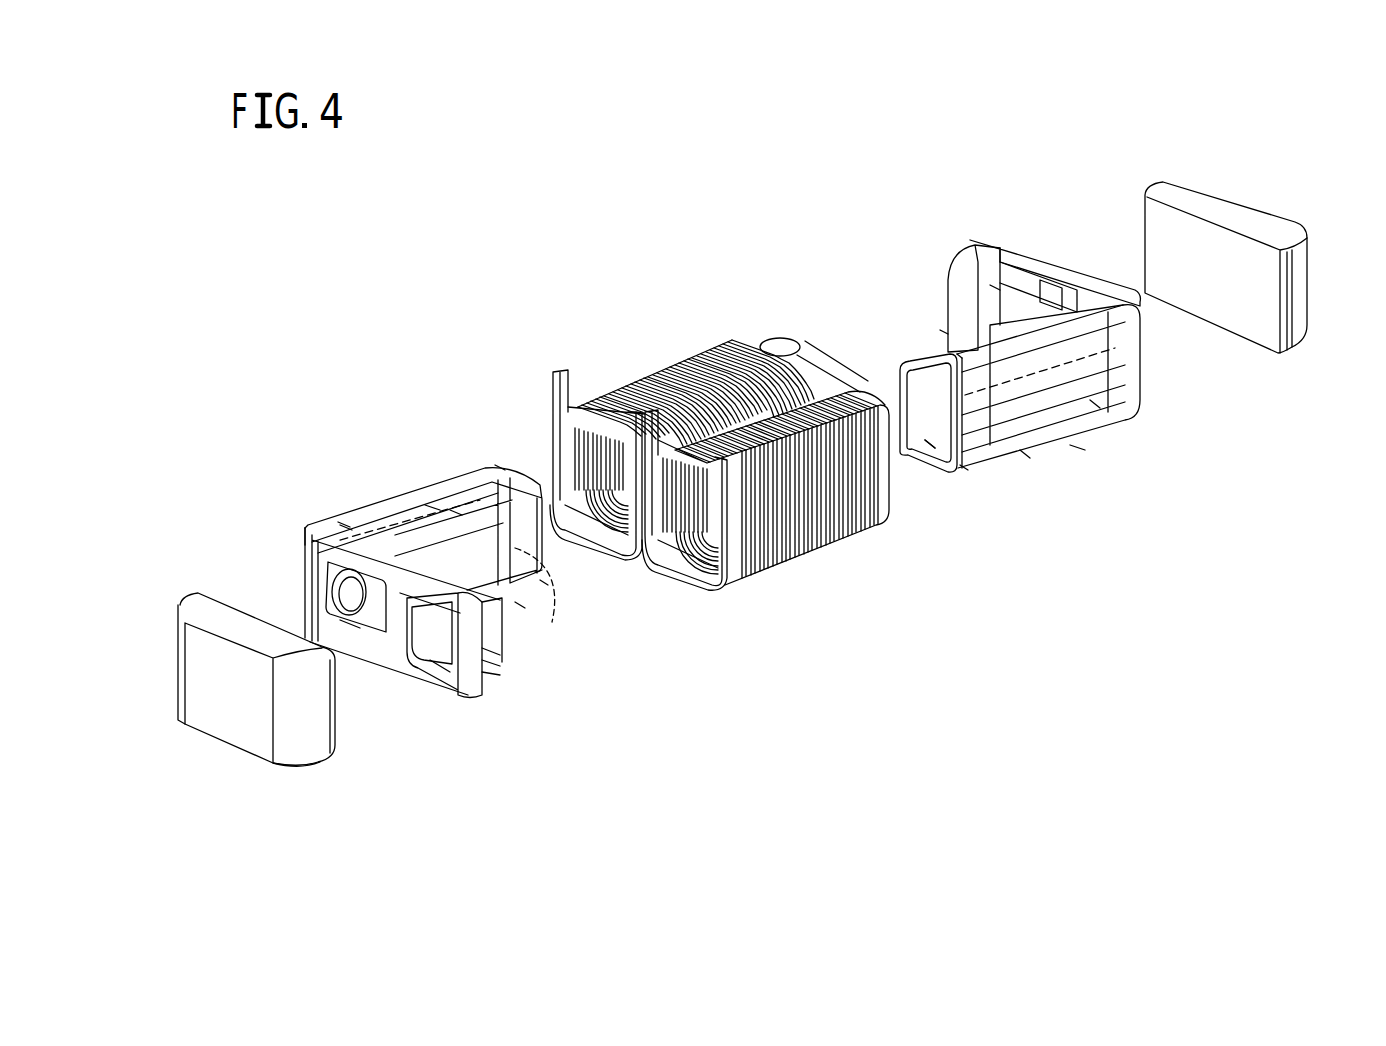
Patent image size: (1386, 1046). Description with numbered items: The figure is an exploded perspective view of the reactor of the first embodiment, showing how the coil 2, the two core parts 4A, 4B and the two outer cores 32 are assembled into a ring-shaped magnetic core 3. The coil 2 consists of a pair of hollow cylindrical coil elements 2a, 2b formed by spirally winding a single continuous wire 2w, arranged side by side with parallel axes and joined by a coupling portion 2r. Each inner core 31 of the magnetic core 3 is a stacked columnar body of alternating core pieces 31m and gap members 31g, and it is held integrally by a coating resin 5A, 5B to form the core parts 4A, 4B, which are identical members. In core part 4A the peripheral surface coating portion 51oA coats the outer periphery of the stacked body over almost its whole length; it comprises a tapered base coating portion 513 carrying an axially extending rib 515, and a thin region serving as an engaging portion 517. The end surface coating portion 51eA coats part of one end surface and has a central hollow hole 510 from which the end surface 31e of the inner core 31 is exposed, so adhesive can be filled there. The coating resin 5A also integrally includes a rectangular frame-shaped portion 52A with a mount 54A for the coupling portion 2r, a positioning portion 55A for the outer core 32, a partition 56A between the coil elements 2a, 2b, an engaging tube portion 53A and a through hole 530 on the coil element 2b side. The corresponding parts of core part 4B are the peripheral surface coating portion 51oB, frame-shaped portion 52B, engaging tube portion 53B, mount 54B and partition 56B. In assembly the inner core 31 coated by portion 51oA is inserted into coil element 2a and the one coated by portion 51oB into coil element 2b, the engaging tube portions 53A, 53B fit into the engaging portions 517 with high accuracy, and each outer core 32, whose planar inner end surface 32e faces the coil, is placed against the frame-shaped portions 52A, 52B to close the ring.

The coil 2 is at (689, 468).
The coil element 2a is at (688, 357).
The coil element 2b is at (805, 568).
The coupling portion 2r is at (797, 340).
The wire 2w is at (550, 385).
The magnetic core 3 is at (1186, 728).
The inner core 31 is at (1198, 763).
The core piece 31m is at (545, 583).
The gap member 31g is at (520, 605).
The end surface 31e is at (930, 444).
The outer core 32 is at (238, 725).
The inner end surface 32e is at (1268, 332).
The core part 4A is at (278, 467).
The core part 4B is at (986, 214).
The coating resin 5A is at (684, 507).
The coating resin 5B is at (1059, 346).
The hollow hole 510 is at (308, 602).
The base coating portion 513 is at (433, 492).
The rib 515 is at (452, 482).
The engaging portion 517 is at (500, 470).
The peripheral surface coating portion 51oA is at (342, 522).
The peripheral surface coating portion 51oB is at (1078, 450).
The end surface coating portion 51eA is at (358, 618).
The frame-shaped portion 52A is at (462, 685).
The frame-shaped portion 52B is at (1140, 380).
The engaging tube portion 53A is at (497, 655).
The engaging tube portion 53B is at (966, 240).
The through hole 530 is at (441, 668).
The mount 54A is at (300, 532).
The mount 54B is at (1005, 243).
The positioning portion 55A is at (303, 570).
The partition 56A is at (352, 520).
The partition 56B is at (1035, 282).